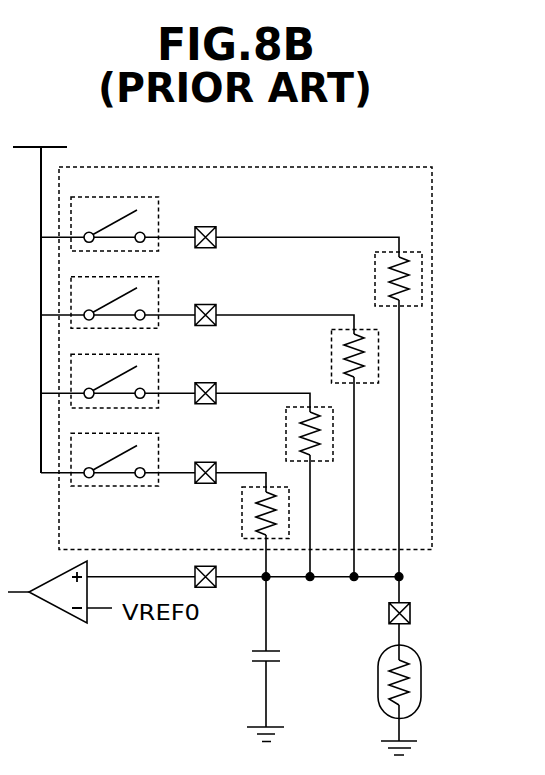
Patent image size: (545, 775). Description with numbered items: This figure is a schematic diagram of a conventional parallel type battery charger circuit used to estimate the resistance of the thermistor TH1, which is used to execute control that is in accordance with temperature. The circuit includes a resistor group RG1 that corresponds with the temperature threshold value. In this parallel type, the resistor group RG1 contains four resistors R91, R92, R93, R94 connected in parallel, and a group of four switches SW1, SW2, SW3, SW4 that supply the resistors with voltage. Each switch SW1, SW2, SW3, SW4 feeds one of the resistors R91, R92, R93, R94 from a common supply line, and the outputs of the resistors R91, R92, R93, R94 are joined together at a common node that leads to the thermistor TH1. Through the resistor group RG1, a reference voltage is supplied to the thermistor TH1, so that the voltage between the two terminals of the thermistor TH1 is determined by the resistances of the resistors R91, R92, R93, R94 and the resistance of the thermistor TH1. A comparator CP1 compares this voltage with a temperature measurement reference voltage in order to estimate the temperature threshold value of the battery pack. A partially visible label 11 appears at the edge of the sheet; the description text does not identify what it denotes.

The resistor group RG1 is at (393, 167).
The switch SW1 is at (159, 220).
The switch SW2 is at (159, 298).
The switch SW3 is at (159, 376).
The switch SW4 is at (159, 454).
The resistor R91 is at (375, 263).
The resistor R92 is at (331, 341).
The resistor R93 is at (286, 447).
The resistor R94 is at (242, 524).
The comparator CP1 is at (47, 581).
The thermistor TH1 is at (378, 667).
The partial label 11 is at (9, 704).